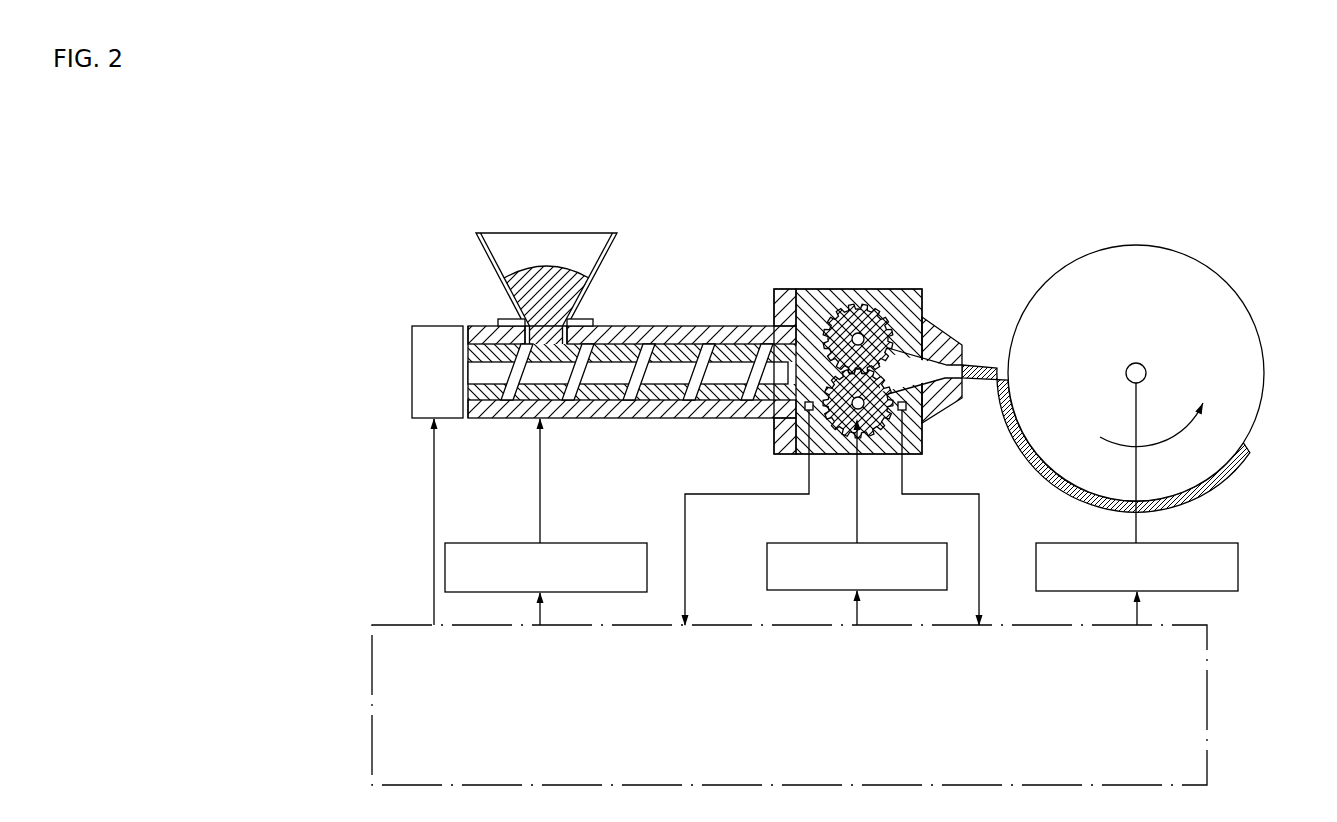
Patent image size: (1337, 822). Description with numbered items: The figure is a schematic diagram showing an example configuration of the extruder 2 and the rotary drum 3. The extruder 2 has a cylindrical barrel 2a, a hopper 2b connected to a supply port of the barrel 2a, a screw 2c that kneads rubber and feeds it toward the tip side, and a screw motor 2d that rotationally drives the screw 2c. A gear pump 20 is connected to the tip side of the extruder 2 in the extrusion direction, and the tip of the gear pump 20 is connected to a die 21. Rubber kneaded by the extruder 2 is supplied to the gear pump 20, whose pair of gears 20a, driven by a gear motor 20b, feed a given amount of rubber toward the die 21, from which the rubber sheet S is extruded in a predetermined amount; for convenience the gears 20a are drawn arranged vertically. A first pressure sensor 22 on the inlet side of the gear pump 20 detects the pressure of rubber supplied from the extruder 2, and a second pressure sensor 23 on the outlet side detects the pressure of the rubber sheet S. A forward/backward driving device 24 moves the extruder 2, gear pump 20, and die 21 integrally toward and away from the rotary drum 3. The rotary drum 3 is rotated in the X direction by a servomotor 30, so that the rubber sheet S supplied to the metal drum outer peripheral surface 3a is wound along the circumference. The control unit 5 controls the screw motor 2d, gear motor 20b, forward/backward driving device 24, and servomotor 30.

The extruder 2 is at (590, 293).
The barrel 2a is at (715, 325).
The hopper 2b is at (528, 232).
The screw 2c is at (620, 367).
The screw motor 2d is at (433, 323).
The gear pump 20 is at (896, 342).
The pair of gears 20a is at (857, 320).
The gear motor 20b is at (818, 542).
The die 21 is at (964, 344).
The first pressure sensor 22 is at (790, 421).
The second pressure sensor 23 is at (921, 430).
The forward/backward driving device 24 is at (507, 542).
The rotary drum 3 is at (1158, 394).
The drum outer peripheral surface 3a is at (1255, 325).
The servomotor 30 is at (1240, 570).
The control unit 5 is at (1207, 688).
The rubber sheet S is at (966, 364).
The X direction X is at (1146, 425).